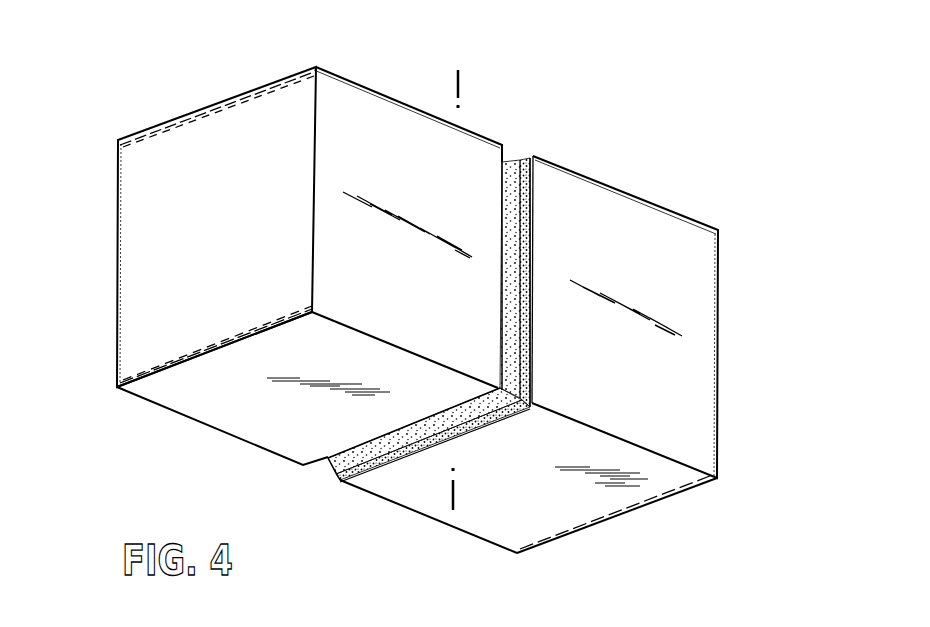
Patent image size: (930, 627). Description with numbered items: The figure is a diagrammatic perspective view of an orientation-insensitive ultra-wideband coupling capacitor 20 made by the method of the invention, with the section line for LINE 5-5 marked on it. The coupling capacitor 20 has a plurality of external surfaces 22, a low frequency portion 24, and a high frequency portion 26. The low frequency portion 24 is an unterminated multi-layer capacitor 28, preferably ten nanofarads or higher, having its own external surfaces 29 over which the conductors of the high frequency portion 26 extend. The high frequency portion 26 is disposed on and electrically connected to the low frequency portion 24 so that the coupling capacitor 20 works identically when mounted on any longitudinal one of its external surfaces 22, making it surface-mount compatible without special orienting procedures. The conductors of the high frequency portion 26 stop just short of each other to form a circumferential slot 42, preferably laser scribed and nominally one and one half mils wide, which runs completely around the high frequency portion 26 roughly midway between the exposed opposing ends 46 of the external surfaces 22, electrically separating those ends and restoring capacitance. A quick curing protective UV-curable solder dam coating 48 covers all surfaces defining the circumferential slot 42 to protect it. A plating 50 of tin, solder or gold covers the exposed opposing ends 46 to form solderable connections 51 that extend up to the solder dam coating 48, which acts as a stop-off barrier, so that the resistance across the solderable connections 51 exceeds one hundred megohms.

The orientation-insensitive ultra-wideband coupling capacitor 20 is at (97, 56).
The external surfaces 22 is at (412, 317).
The low frequency portion 24 is at (468, 317).
The unterminated multi-layer capacitor 28 is at (520, 263).
The high frequency portion 26 is at (146, 431).
The external surfaces 29 is at (513, 160).
The circumferential slot 42 is at (471, 319).
The quick curing protective UV-curable solder dam coating 48 is at (530, 328).
The exposed opposing ends 46 is at (412, 429).
The plating 50 is at (112, 365).
The solderable connections 51 is at (143, 170).
The section line for FIG. 5 is at (463, 74).